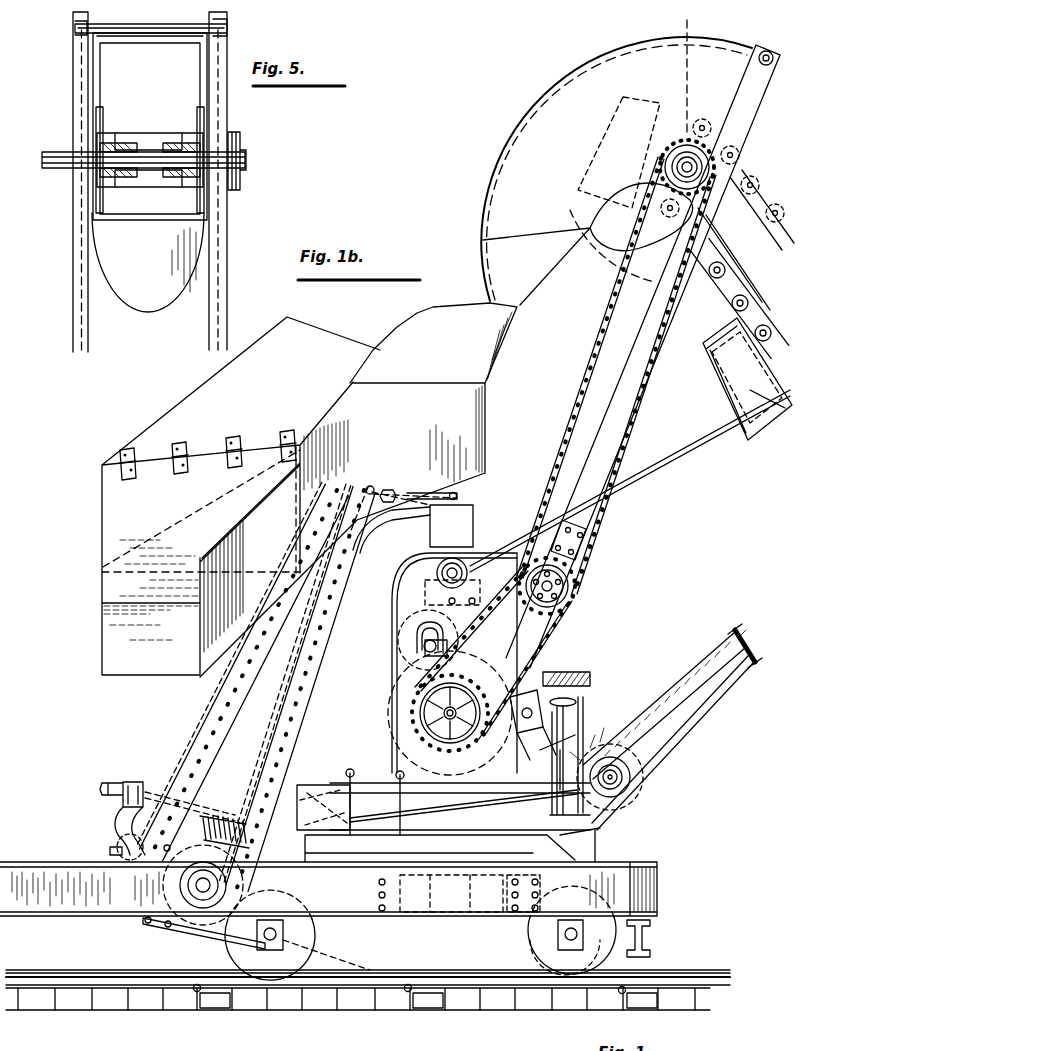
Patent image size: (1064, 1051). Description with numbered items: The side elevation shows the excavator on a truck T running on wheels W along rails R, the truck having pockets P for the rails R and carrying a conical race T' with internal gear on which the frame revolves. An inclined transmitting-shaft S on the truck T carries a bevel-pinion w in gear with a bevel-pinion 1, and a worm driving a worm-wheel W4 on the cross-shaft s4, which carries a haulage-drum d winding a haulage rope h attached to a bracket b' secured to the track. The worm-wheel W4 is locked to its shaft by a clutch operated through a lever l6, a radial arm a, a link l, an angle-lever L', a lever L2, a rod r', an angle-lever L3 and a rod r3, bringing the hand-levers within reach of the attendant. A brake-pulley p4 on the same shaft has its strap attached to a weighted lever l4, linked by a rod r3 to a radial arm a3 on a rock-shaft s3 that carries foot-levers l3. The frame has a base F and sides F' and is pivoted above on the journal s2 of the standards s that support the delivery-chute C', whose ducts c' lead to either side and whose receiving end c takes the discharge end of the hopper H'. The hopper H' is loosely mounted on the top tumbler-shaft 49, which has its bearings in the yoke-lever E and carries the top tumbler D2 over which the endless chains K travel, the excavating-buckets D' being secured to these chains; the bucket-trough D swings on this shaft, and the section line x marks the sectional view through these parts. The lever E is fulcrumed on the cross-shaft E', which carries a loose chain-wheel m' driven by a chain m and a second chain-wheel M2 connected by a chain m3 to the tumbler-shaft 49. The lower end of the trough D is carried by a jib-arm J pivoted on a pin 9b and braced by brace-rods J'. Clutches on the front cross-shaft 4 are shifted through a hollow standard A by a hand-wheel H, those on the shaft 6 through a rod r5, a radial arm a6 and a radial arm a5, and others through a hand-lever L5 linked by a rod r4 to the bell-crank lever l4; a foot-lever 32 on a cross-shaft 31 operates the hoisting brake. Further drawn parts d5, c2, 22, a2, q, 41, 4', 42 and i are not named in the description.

In FIG. 5, the frame/top bar A is at (160, 40).
In FIG. 1B, the frame/top bar A is at (570, 715).
In FIG. 5, the drum hub D2 is at (152, 132).
In FIG. 5, the flange collar 9b is at (240, 140).
In FIG. 5, the shaft 49 is at (248, 160).
In FIG. 1B, the shaft 49 is at (687, 140).
In FIG. 5, the drum casing H' is at (148, 262).
In FIG. 1B, the drum casing H' is at (616, 171).
In FIG. 5, the post / inclined bar E is at (141, 182).
In FIG. 1B, the post / inclined bar E is at (643, 356).
In FIG. 1B, the axis line x is at (687, 69).
In FIG. 1B, the upper chain m3 is at (640, 388).
In FIG. 1B, the sprocket E' is at (557, 586).
In FIG. 1B, the sprocket hub m' is at (586, 607).
In FIG. 1B, the lower chain m is at (505, 653).
In FIG. 1B, the roller bar D is at (727, 239).
In FIG. 1B, the link bar K is at (734, 262).
In FIG. 1B, the roller pin d5 is at (752, 325).
In FIG. 1B, the plate D' is at (747, 379).
In FIG. 1B, the brace bar J' is at (630, 481).
In FIG. 1B, the hopper side plate C' is at (241, 496).
In FIG. 1B, the hopper front c' is at (151, 563).
In FIG. 1B, the clips c2 is at (208, 454).
In FIG. 1B, the chute c is at (358, 490).
In FIG. 1B, the pivot bracket L3 is at (403, 498).
In FIG. 1B, the block r' is at (451, 520).
In FIG. 1B, the pulley s2 is at (427, 567).
In FIG. 1B, the frame F' is at (435, 640).
In FIG. 1B, the bracket L2 is at (458, 592).
In FIG. 1B, the bracket 6 is at (428, 640).
In FIG. 1B, the gear wheel M2 is at (458, 680).
In FIG. 1B, the pin 22 is at (499, 663).
In FIG. 1B, the pin 4 is at (517, 740).
In FIG. 1B, the arm a2 is at (497, 765).
In FIG. 1B, the arm a is at (422, 747).
In FIG. 1B, the arm a5 is at (395, 750).
In FIG. 1B, the lever L' is at (534, 767).
In FIG. 1B, the block l is at (533, 725).
In FIG. 1B, the hatch block H is at (580, 676).
In FIG. 1B, the rod l6 is at (566, 745).
In FIG. 1B, the pulley q is at (610, 769).
In FIG. 1B, the lever L5 is at (596, 808).
In FIG. 1B, the beam J is at (672, 727).
In FIG. 1B, the pin 41 is at (572, 840).
In FIG. 1B, the pin 4' is at (585, 861).
In FIG. 1B, the boom bar S is at (242, 671).
In FIG. 1B, the bar s is at (254, 707).
In FIG. 1B, the boom bar r3 is at (241, 709).
In FIG. 1B, the spring s3 is at (197, 820).
In FIG. 1B, the frame block F is at (312, 807).
In FIG. 1B, the pin 42 is at (340, 818).
In FIG. 1B, the bracket i is at (111, 818).
In FIG. 1B, the hub wheel W4 is at (201, 878).
In FIG. 1B, the truck frame T is at (339, 889).
In FIG. 1B, the platform T' is at (450, 817).
In FIG. 1B, the rod r5 is at (463, 803).
In FIG. 1B, the rod r4 is at (366, 803).
In FIG. 1B, the arm a6 is at (412, 795).
In FIG. 1B, the plate 32 is at (524, 823).
In FIG. 1B, the plate 31 is at (414, 845).
In FIG. 1B, the pin l4 is at (346, 770).
In FIG. 1B, the link a3 is at (201, 933).
In FIG. 1B, the link s4 is at (175, 952).
In FIG. 1B, the pin p4 is at (197, 957).
In FIG. 1B, the link d is at (217, 955).
In FIG. 1B, the link l3 is at (245, 953).
In FIG. 1B, the rod h is at (326, 955).
In FIG. 1B, the wheel W is at (520, 942).
In FIG. 1B, the bracket P is at (650, 938).
In FIG. 1B, the pin w is at (396, 940).
In FIG. 1B, the pin 1 is at (475, 943).
In FIG. 1B, the rail R is at (368, 981).
In FIG. 1B, the tie box b' is at (426, 1012).